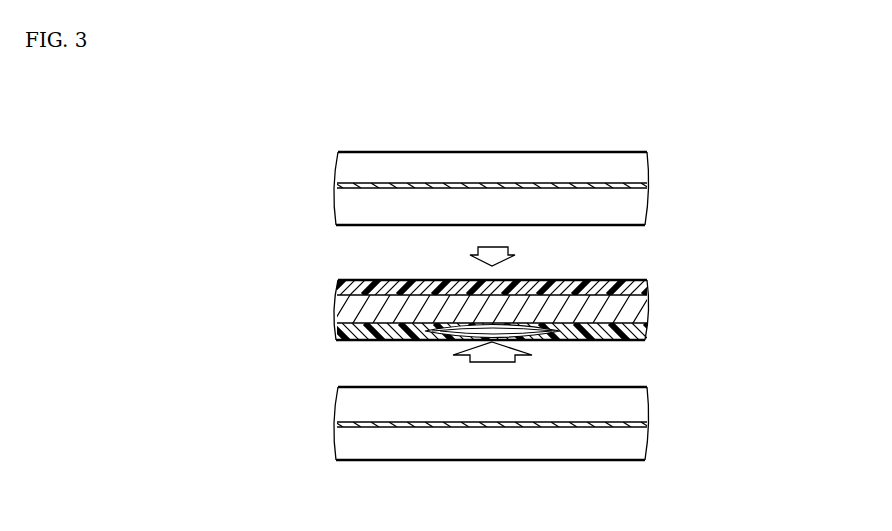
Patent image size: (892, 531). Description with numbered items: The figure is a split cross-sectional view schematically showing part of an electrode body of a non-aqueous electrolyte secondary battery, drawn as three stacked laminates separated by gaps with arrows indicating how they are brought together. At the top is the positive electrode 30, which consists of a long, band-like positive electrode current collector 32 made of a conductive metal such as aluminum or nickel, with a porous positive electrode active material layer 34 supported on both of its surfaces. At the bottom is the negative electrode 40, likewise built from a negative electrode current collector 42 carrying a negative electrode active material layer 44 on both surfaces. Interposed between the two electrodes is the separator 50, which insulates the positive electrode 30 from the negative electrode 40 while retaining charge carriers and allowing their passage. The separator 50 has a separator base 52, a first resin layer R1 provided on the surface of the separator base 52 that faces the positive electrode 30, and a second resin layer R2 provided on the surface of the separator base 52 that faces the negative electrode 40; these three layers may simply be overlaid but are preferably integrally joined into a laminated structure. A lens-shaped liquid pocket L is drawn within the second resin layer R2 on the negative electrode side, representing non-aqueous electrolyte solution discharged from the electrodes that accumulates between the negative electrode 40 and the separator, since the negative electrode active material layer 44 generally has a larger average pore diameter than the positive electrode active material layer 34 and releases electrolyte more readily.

The positive electrode 30 is at (557, 190).
The positive electrode active material layer 34 is at (641, 164).
The positive electrode current collector 32 is at (642, 186).
The separator 50 is at (557, 325).
The first resin layer R1 is at (641, 287).
The separator base 52 is at (641, 312).
The second resin layer R2 is at (641, 338).
The liquid pocket L is at (530, 333).
The negative electrode 40 is at (557, 425).
The negative electrode active material layer 44 is at (641, 399).
The negative electrode current collector 42 is at (642, 424).